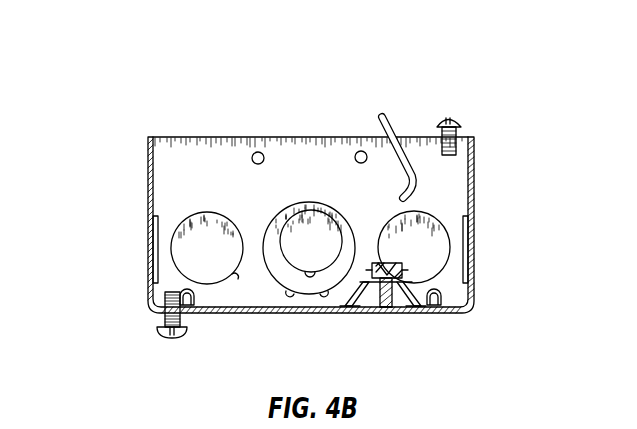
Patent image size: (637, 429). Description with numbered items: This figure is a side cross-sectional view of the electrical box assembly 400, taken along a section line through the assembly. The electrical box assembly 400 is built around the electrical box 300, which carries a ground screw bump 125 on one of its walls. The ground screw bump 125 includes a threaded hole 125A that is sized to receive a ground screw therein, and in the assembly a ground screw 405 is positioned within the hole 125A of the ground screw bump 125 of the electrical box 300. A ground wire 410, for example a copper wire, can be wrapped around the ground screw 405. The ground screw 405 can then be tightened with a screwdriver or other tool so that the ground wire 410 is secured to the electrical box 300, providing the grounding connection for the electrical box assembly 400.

The electrical box assembly 400 is at (147, 53).
The electrical box 300 is at (477, 165).
The ground wire 410 is at (357, 268).
The ground screw 405 is at (405, 272).
The ground screw bump 125 is at (408, 290).
The threaded hole 125A is at (378, 307).